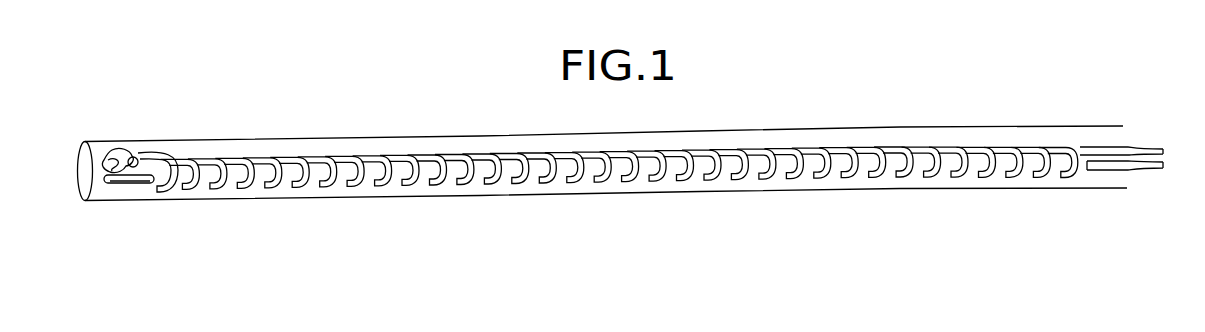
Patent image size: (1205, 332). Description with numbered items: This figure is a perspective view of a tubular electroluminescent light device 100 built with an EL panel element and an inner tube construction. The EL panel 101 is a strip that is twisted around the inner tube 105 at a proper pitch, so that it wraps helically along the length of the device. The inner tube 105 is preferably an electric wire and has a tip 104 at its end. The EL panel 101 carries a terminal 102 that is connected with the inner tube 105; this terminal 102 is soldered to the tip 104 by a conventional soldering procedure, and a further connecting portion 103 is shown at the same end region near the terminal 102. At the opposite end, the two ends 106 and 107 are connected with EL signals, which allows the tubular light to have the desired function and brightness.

The tubular body 100 is at (513, 197).
The EL panel 101 is at (162, 151).
The terminal 102 is at (133, 158).
The bent end portion 103 is at (110, 143).
The tip 104 is at (88, 172).
The inner tube 105 is at (155, 185).
The end 106 is at (1150, 147).
The end 107 is at (1148, 168).